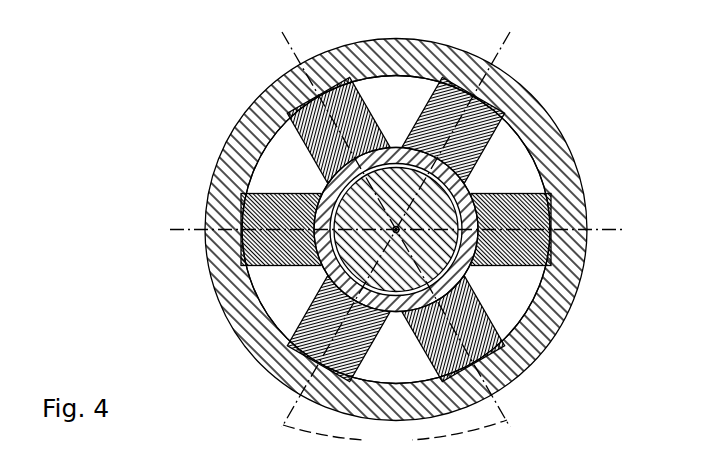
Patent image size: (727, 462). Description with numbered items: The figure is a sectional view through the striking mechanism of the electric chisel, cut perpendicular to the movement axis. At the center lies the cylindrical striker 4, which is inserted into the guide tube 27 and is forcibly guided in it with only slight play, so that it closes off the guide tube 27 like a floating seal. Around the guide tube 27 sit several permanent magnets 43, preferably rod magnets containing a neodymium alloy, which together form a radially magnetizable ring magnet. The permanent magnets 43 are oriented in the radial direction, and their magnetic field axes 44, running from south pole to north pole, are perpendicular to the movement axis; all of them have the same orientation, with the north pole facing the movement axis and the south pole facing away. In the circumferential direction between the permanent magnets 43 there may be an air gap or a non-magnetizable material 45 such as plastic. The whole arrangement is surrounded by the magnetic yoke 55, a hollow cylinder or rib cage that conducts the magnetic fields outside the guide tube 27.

The non-magnetizable material 45 is at (253, 153).
The magnetic yoke 55 is at (237, 178).
The permanent magnets 43 is at (240, 297).
The striker 4 is at (545, 250).
The guide tube 27 is at (467, 270).
The magnetic field axes 44 is at (396, 243).